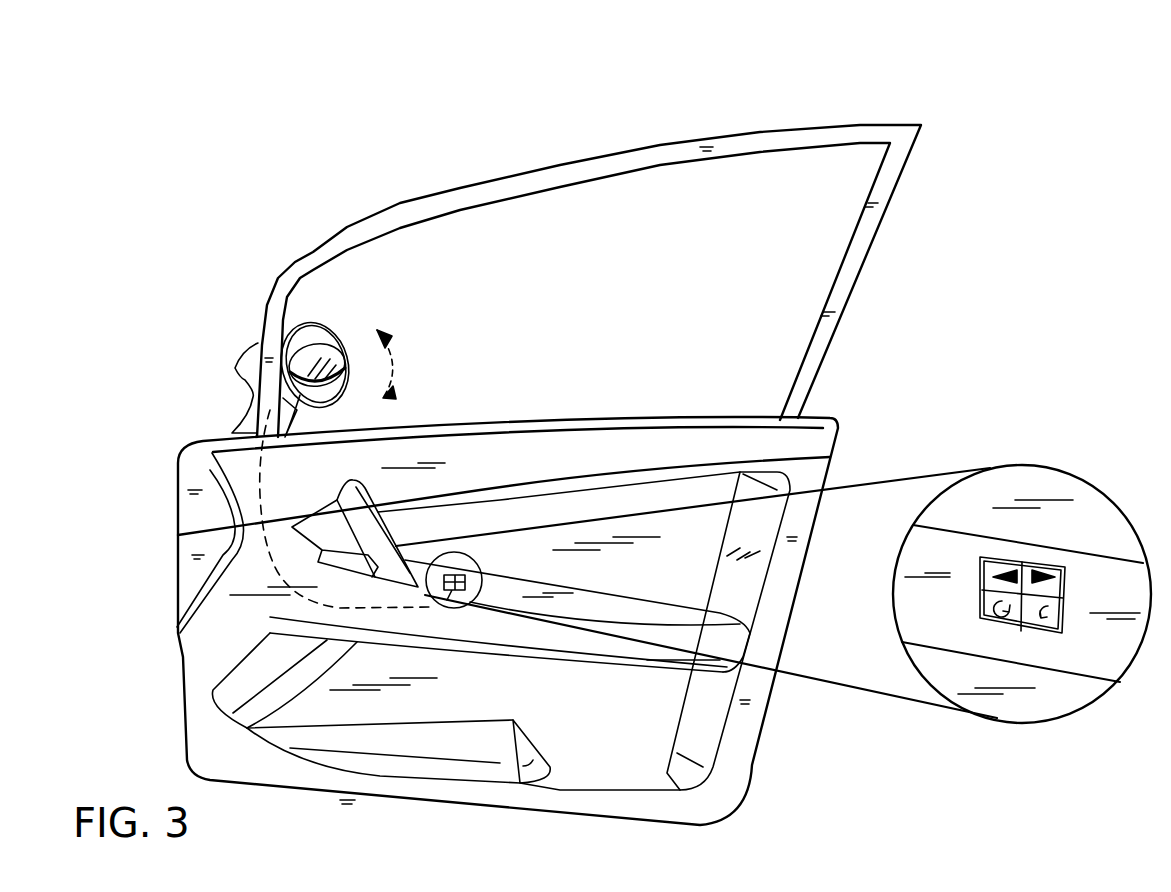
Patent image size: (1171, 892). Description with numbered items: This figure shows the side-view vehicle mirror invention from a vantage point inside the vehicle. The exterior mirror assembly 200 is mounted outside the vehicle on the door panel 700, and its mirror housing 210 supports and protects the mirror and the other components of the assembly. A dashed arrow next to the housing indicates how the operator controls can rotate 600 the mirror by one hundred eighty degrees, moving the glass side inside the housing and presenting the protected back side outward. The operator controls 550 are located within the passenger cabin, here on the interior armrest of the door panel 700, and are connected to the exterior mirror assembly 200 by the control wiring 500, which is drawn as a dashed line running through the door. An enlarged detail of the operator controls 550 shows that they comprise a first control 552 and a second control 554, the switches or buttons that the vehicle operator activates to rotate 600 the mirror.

The exterior mirror assembly 200 is at (227, 308).
The mirror housing 210 is at (305, 322).
The control wiring 500 is at (260, 490).
The operator controls 550 is at (453, 608).
The first control 552 is at (1002, 618).
The second control 554 is at (1043, 623).
The rotate 600 is at (422, 364).
The door panel 700 is at (833, 415).